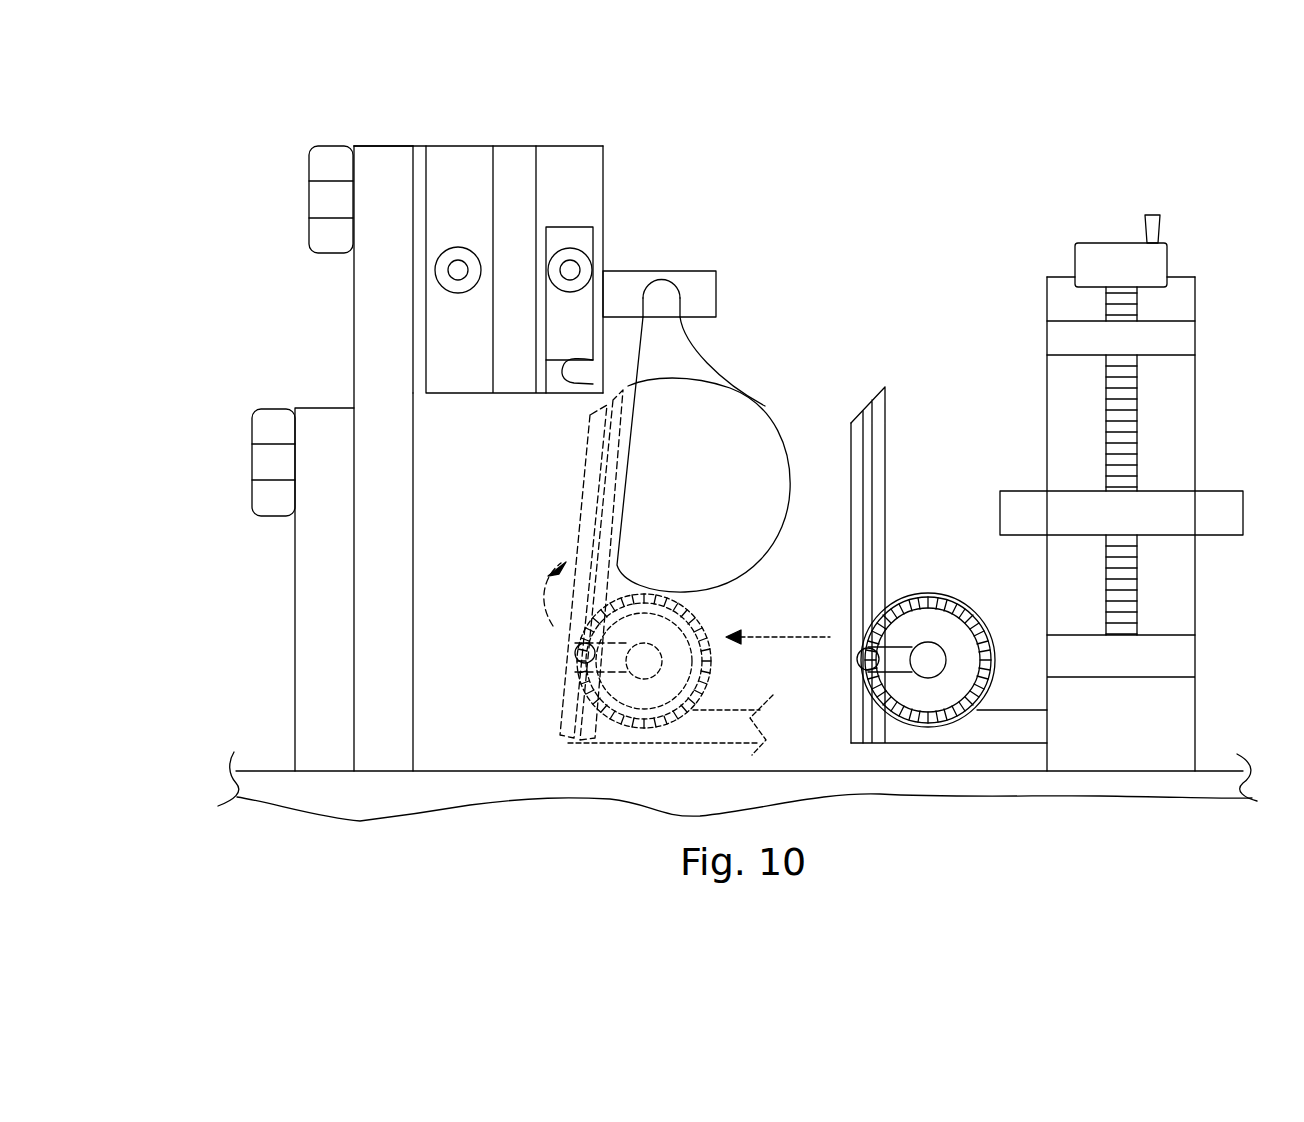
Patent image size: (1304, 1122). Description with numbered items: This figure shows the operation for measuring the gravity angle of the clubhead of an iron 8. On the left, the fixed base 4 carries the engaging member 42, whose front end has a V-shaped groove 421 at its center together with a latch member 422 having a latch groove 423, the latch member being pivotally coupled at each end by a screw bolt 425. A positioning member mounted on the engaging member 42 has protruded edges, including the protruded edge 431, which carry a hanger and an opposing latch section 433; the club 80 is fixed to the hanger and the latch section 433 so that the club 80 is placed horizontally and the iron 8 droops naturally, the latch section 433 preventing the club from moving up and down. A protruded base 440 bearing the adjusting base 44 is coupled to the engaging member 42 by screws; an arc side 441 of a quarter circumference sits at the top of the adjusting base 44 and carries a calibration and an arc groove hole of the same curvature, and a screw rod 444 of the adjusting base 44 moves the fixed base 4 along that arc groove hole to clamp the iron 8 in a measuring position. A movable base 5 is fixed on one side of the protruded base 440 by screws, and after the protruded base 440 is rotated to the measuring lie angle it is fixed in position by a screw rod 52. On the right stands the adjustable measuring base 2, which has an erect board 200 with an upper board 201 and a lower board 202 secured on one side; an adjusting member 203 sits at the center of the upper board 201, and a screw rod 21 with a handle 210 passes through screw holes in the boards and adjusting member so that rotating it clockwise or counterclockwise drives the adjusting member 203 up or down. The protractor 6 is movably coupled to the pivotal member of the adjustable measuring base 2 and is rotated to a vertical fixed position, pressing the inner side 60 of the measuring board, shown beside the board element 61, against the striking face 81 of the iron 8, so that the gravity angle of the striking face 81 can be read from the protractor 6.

The adjustable measuring base 2 is at (1103, 243).
The fixed base 4 is at (572, 144).
The movable base 5 is at (322, 436).
The protractor 6 is at (900, 592).
The iron 8 is at (708, 448).
The screw rod 21 is at (1120, 303).
The engaging member 42 is at (566, 181).
The adjusting base 44 is at (382, 318).
The screw rod 52 is at (266, 455).
The inner side of the measuring board 60 is at (885, 456).
The guide plate 61 is at (848, 452).
The club 80 is at (661, 287).
The striking face 81 is at (618, 500).
The erect board 200 is at (1155, 748).
The upper board 201 is at (1165, 333).
The lower board 202 is at (1162, 665).
The adjusting member 203 is at (1048, 517).
The handle 210 is at (1153, 228).
The V-shaped groove 421 is at (517, 173).
The latch member 422 is at (578, 238).
The latch groove 423 is at (563, 381).
The screw bolt 425 is at (572, 270).
The protruded edge 431 is at (700, 295).
The latch section 433 is at (671, 290).
The protruded base 440 is at (385, 615).
The arc side 441 is at (382, 144).
The screw rod 444 is at (330, 197).